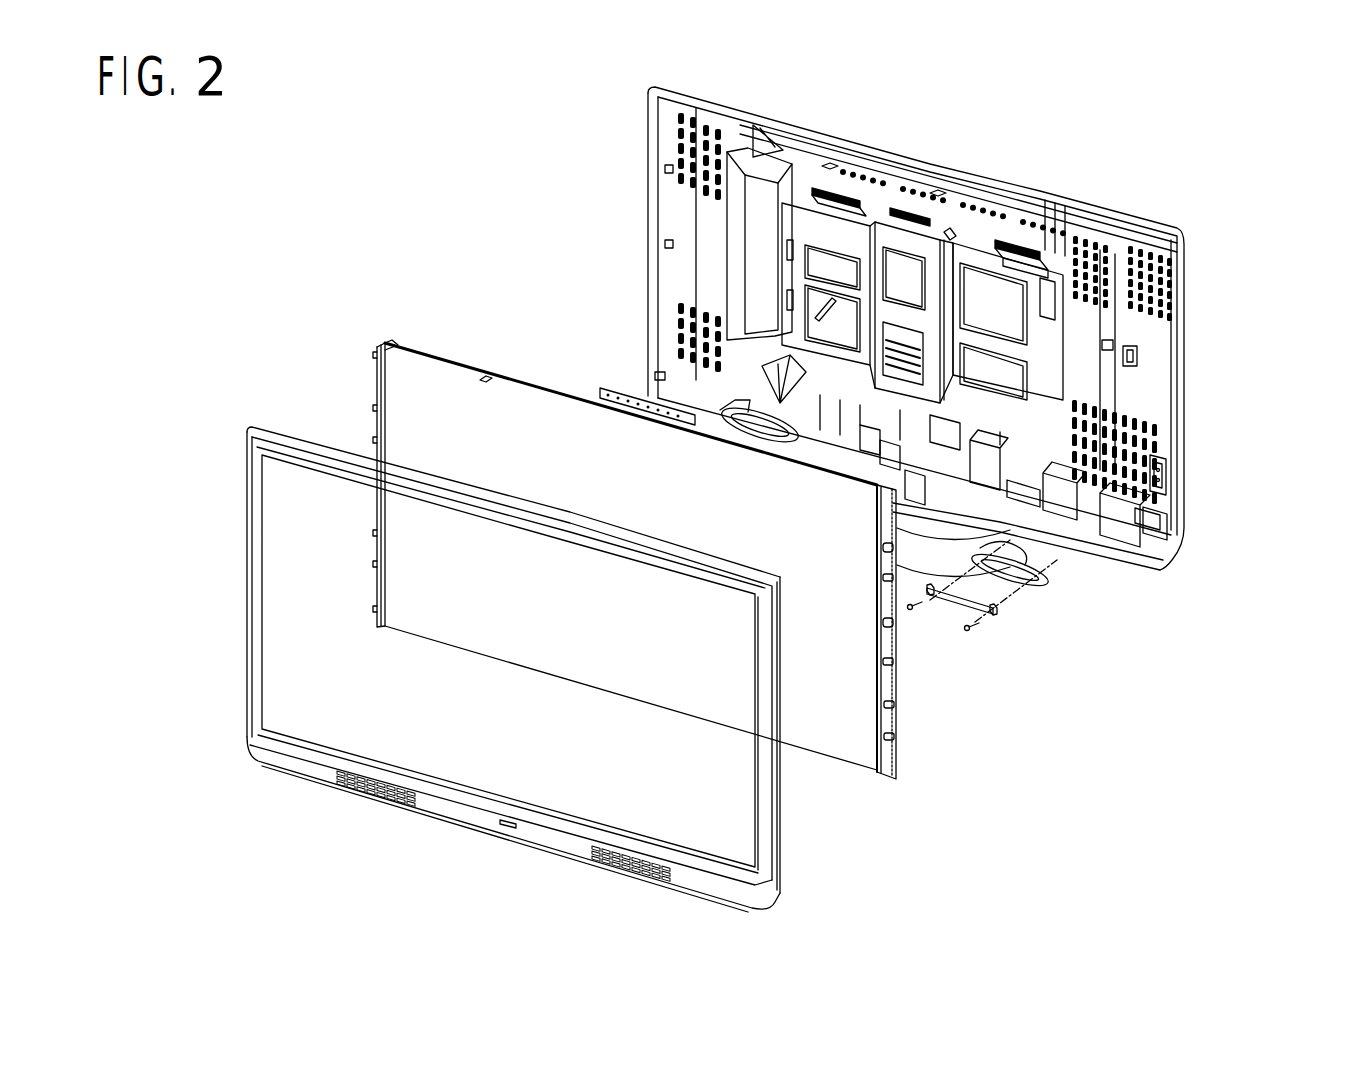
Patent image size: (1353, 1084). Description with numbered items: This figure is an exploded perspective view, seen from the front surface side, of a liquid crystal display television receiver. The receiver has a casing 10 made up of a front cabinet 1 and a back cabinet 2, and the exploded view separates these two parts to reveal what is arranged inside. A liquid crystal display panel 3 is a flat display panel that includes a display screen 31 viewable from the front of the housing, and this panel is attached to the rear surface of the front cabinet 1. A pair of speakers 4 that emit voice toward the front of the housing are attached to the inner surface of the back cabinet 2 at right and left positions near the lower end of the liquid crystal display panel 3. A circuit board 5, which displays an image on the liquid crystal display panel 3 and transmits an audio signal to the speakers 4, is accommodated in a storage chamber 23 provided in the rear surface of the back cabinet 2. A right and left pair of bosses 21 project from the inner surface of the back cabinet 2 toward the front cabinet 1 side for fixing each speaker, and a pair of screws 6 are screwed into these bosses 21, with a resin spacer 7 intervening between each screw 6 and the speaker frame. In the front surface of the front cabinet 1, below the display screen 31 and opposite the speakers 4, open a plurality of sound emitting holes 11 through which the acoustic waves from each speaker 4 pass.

The front cabinet 1 is at (653, 695).
The back cabinet 2 is at (978, 426).
The liquid crystal display panel 3 is at (664, 560).
The speaker 4 is at (752, 430).
The circuit board 5 is at (1010, 293).
The screw 6 is at (912, 610).
The spacer 7 is at (997, 612).
The casing 10 is at (1193, 758).
The sound emitting holes 11 is at (380, 797).
The boss 21 is at (1152, 478).
The storage chamber 23 is at (1000, 240).
The display screen 31 is at (860, 741).